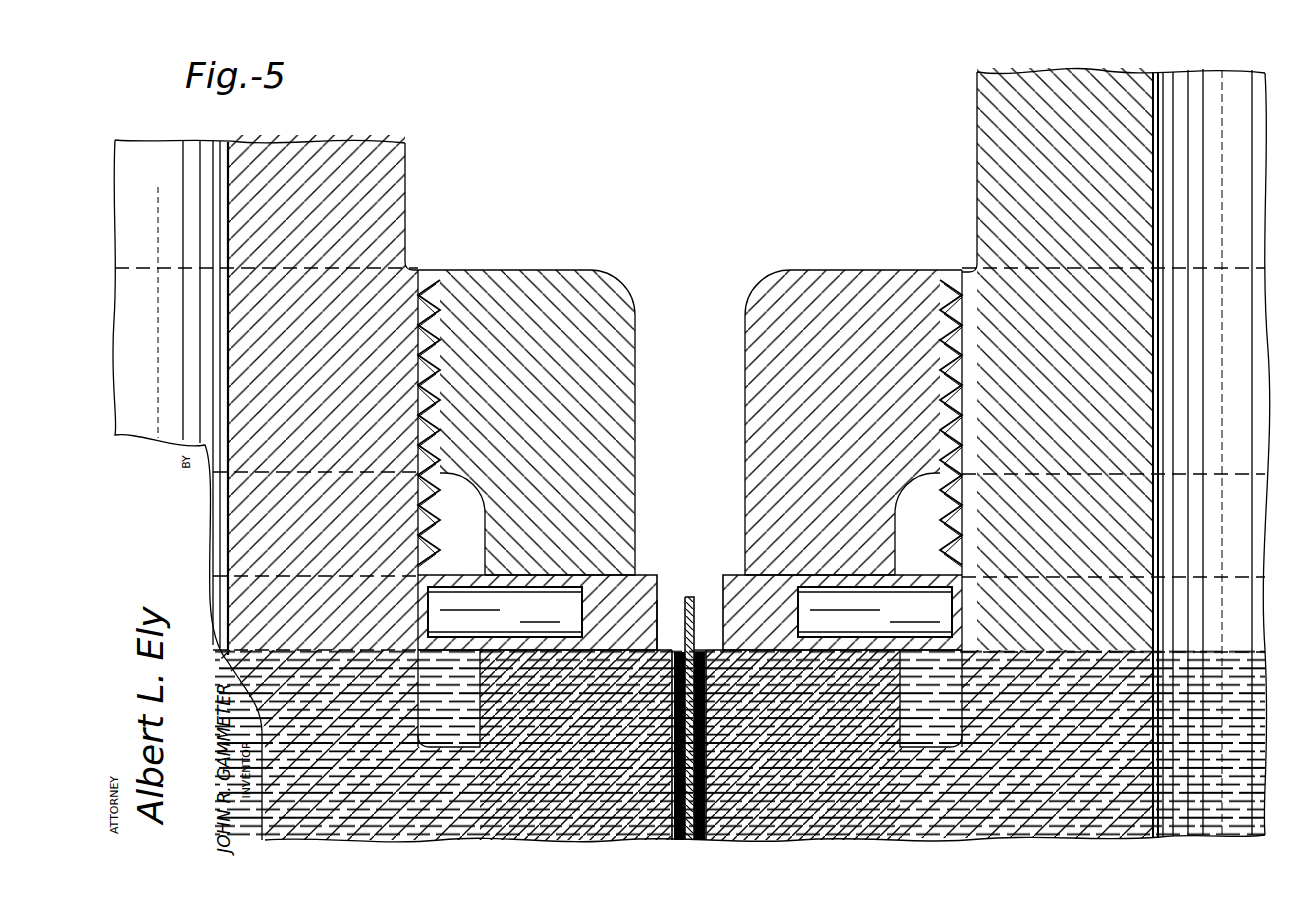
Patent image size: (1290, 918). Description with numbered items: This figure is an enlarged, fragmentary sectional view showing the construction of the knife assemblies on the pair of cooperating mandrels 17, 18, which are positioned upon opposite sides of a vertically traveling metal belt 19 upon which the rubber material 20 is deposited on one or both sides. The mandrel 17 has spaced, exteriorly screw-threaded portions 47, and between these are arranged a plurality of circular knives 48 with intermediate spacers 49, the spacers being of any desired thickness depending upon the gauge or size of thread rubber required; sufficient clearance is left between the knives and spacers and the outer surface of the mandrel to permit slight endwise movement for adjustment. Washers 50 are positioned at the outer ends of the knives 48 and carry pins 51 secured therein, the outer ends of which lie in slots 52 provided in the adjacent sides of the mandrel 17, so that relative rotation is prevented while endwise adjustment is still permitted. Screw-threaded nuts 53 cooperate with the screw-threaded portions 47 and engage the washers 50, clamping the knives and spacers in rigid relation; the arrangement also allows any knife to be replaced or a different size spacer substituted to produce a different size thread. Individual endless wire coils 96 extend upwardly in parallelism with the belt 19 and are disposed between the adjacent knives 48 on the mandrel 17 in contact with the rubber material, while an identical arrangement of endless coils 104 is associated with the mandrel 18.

The mandrel 17 is at (407, 190).
The mandrel 18 is at (978, 222).
The screw-threaded portions 47 is at (432, 280).
The screw-threaded nuts 53 is at (570, 270).
The slots 52 is at (452, 577).
The pins 51 is at (480, 610).
The washers 50 is at (660, 578).
The spacers 49 is at (655, 640).
The metal belt 19 is at (690, 598).
The circular knives 48 is at (667, 655).
The rubber material 20 is at (698, 655).
The endless coils 96 is at (672, 840).
The endless coils 104 is at (708, 840).